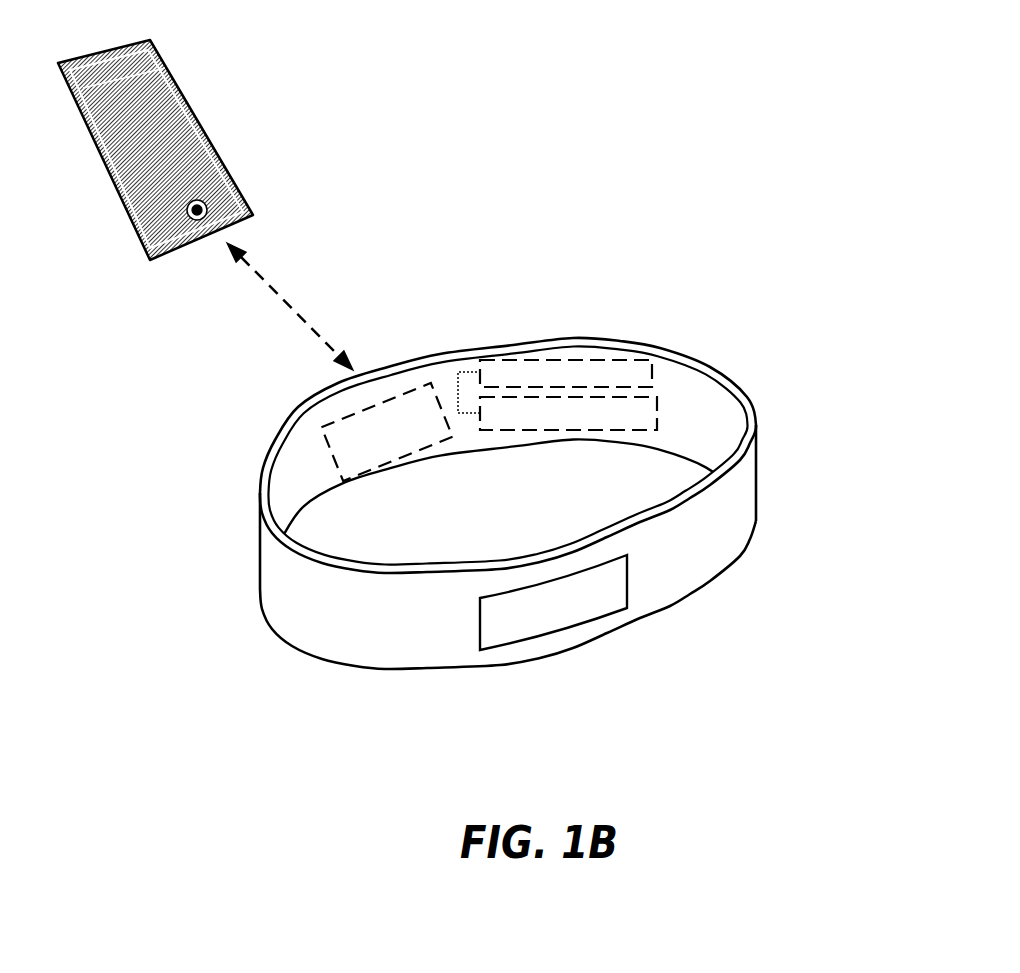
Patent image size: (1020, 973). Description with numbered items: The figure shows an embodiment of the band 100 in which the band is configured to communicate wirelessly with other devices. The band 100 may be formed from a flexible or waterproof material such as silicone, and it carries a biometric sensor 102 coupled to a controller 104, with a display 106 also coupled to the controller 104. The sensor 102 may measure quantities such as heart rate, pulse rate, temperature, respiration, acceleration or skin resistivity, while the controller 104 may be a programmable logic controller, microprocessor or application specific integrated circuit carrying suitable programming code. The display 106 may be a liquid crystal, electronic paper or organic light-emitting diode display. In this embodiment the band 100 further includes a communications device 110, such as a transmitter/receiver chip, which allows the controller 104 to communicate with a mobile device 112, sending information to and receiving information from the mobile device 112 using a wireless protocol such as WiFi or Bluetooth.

The band 100 is at (770, 303).
The biometric sensor 102 is at (603, 358).
The controller 104 is at (658, 410).
The display 106 is at (607, 618).
The communications device 110 is at (362, 410).
The mobile device 112 is at (193, 108).